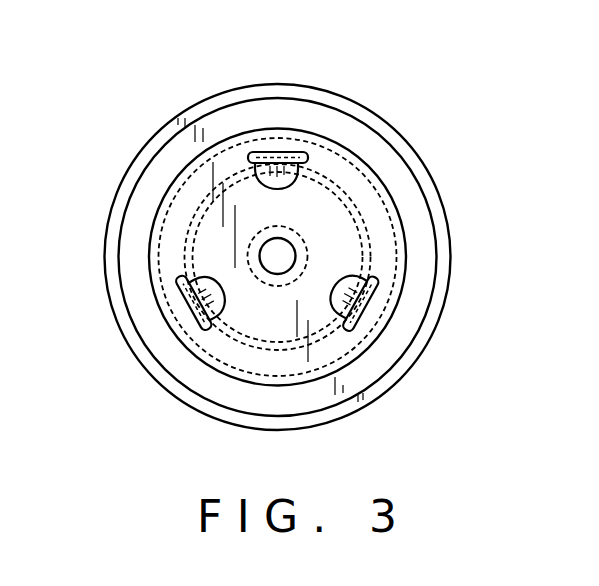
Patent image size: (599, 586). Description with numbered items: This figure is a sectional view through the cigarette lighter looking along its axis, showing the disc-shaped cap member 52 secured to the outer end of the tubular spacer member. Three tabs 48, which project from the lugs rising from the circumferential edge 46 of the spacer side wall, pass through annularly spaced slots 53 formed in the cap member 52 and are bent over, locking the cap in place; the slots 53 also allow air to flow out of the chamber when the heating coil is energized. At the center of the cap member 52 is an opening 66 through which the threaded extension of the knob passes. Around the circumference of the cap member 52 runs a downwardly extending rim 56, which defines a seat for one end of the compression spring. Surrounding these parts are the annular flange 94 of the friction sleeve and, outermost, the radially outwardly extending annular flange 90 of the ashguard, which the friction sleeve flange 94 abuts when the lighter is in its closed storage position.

The annular flange 90 is at (447, 281).
The annular flange 94 is at (420, 222).
The cap member 52 is at (362, 192).
The rim 56 is at (290, 132).
The circumferential edge 46 is at (332, 177).
The opening 66 is at (260, 253).
The slots 53 is at (222, 207).
The tab 48 is at (258, 188).